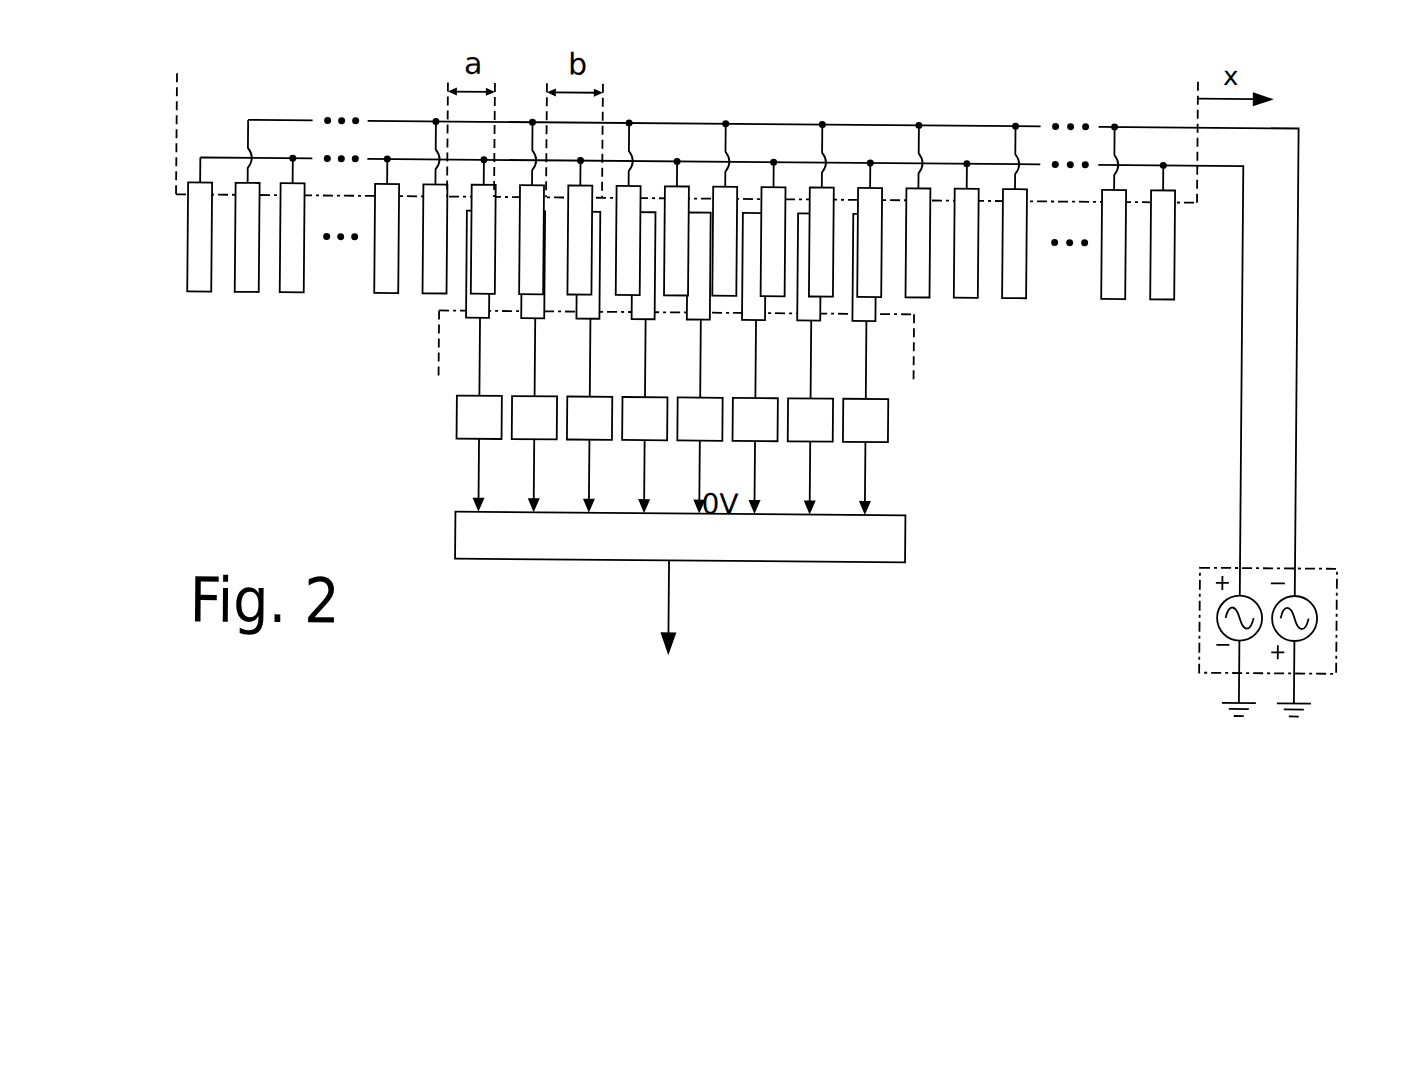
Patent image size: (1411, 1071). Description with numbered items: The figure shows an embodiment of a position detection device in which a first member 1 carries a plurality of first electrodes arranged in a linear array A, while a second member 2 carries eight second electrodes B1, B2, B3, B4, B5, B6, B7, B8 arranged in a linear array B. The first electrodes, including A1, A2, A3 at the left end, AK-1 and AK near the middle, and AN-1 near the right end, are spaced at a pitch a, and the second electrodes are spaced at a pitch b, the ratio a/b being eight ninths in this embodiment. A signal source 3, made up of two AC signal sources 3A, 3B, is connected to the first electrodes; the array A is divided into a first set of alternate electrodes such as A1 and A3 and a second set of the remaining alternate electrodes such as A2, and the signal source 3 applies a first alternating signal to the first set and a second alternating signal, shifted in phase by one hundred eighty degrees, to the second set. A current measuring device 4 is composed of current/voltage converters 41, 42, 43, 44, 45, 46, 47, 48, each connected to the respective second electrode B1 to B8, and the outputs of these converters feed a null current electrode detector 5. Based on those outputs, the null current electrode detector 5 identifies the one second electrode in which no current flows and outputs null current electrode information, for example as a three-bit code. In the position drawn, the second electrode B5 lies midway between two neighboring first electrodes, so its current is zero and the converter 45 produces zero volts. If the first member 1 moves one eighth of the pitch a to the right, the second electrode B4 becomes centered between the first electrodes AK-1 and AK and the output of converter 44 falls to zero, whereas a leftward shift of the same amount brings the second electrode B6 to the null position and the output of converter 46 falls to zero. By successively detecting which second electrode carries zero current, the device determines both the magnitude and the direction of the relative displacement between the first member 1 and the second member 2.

The first member 1 is at (176, 151).
The second member 2 is at (440, 326).
The signal source 3 is at (1257, 615).
The AC signal source 3A is at (1220, 616).
The AC signal source 3B is at (1320, 627).
The current measuring device 4 is at (702, 455).
The I/V converter 41 is at (459, 441).
The I/V converter 42 is at (514, 441).
The I/V converter 43 is at (569, 441).
The I/V converter 44 is at (625, 441).
The I/V converter 45 is at (680, 441).
The I/V converter 46 is at (735, 441).
The I/V converter 47 is at (790, 441).
The I/V converter 48 is at (846, 441).
The null current electrode detector 5 is at (908, 550).
The linear array A is at (170, 254).
The linear array B is at (884, 327).
The first electrode A1 is at (198, 296).
The first electrode A2 is at (246, 296).
The first electrode A3 is at (296, 296).
The first electrode AK-1 is at (646, 186).
The first electrode AK is at (688, 186).
The first electrode AN-1 is at (1113, 296).
The second electrode B1 is at (478, 320).
The second electrode B2 is at (533, 320).
The second electrode B3 is at (588, 320).
The second electrode B4 is at (643, 320).
The second electrode B5 is at (698, 320).
The second electrode B6 is at (753, 320).
The second electrode B7 is at (808, 320).
The second electrode B8 is at (863, 320).